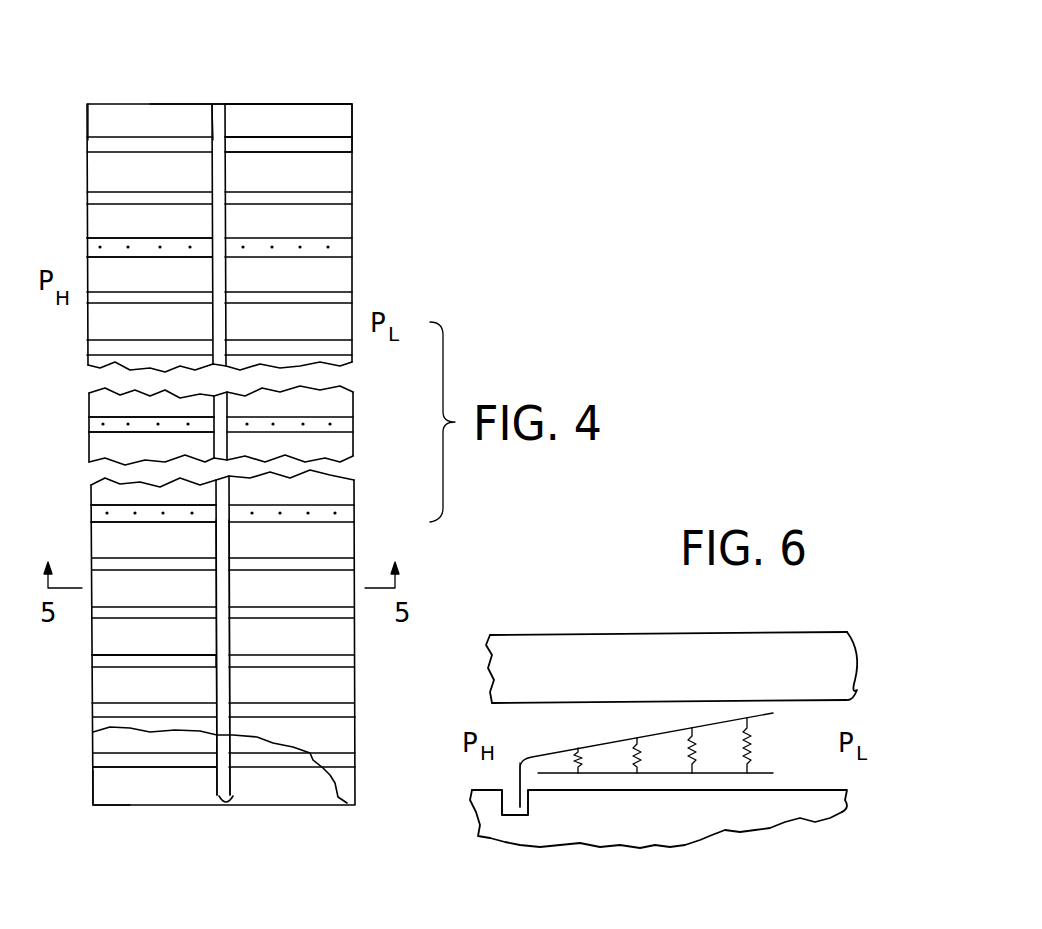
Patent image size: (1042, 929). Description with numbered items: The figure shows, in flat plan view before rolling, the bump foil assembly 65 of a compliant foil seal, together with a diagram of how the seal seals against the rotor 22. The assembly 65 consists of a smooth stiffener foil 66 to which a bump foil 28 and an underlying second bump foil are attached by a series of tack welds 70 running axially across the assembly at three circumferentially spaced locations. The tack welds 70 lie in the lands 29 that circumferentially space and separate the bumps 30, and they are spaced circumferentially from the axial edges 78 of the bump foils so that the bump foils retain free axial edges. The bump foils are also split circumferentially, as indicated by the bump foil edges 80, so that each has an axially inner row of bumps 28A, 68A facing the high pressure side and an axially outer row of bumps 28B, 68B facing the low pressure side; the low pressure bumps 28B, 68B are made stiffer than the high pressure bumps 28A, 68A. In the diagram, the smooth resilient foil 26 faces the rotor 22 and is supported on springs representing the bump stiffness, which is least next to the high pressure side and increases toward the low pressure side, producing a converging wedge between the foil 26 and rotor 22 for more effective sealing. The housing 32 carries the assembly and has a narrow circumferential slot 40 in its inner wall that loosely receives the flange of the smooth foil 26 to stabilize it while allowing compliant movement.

In FIG. 6, the rotor 22 is at (663, 686).
In FIG. 6, the smooth resilient foil 26 is at (722, 716).
In FIG. 4, the bump foil 28 is at (273, 104).
In FIG. 4, the axially inner row of bumps 28A is at (144, 382).
In FIG. 4, the axially outer row of bumps 28B is at (283, 382).
In FIG. 4, the lands 29 is at (340, 145).
In FIG. 4, the bumps 30 is at (337, 118).
In FIG. 6, the housing 32 is at (577, 837).
In FIG. 6, the recess or slot 40 is at (504, 800).
In FIG. 4, the bump foil assembly 65 is at (250, 78).
In FIG. 4, the smooth stiffener foil 66 is at (217, 104).
In FIG. 6, the smooth stiffener foil 66 is at (713, 773).
In FIG. 4, the axially inner row of bumps of second bump foil 68A is at (151, 788).
In FIG. 4, the axially outer row of bumps of second bump foil 68B is at (282, 788).
In FIG. 4, the tack welds 70 is at (300, 243).
In FIG. 4, the axial edges of the bump foils 78 is at (110, 104).
In FIG. 4, the bump foil edges 80 is at (232, 680).